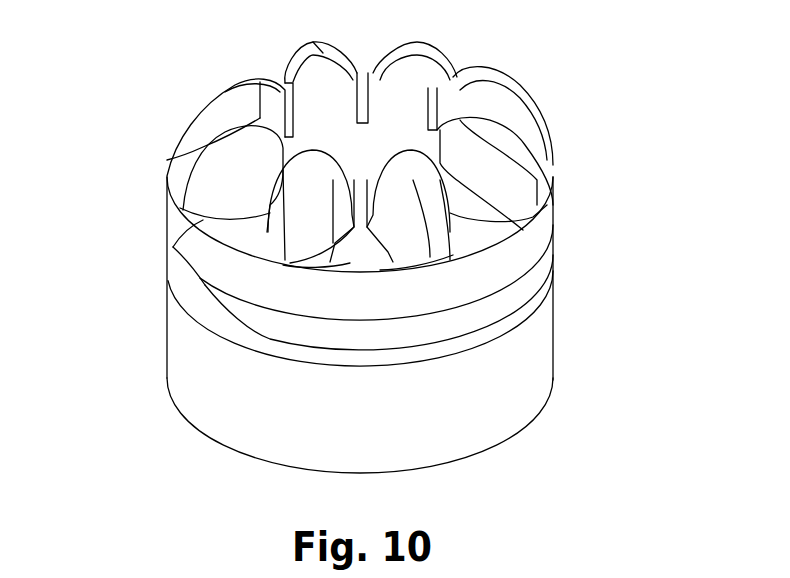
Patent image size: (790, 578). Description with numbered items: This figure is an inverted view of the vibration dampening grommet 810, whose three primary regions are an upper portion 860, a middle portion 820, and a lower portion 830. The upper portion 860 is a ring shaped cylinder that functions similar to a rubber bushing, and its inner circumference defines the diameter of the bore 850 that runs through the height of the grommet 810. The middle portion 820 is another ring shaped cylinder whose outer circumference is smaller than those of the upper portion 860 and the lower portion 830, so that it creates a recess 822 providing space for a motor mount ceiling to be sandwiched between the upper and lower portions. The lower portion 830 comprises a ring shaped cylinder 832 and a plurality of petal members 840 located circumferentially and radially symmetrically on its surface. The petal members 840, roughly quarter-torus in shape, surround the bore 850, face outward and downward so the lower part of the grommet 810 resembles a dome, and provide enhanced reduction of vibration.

The grommet 810 is at (546, 424).
The middle portion 820 is at (480, 308).
The recess 822 is at (197, 278).
The lower portion 830 is at (547, 152).
The ring shaped cylinder 832 is at (550, 223).
The petal members 840 is at (203, 188).
The bore 850 is at (366, 128).
The upper portion 860 is at (532, 361).